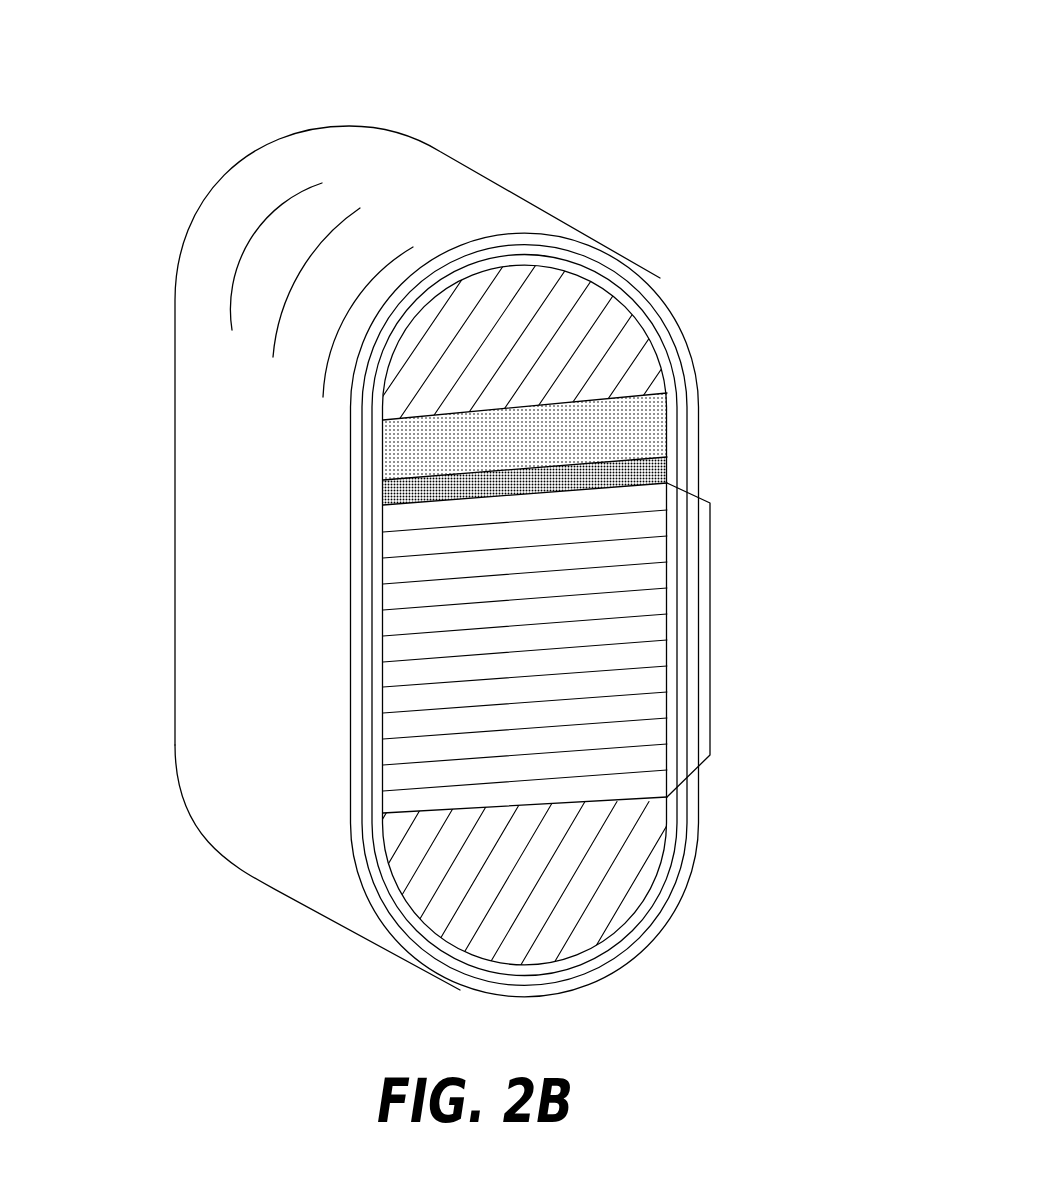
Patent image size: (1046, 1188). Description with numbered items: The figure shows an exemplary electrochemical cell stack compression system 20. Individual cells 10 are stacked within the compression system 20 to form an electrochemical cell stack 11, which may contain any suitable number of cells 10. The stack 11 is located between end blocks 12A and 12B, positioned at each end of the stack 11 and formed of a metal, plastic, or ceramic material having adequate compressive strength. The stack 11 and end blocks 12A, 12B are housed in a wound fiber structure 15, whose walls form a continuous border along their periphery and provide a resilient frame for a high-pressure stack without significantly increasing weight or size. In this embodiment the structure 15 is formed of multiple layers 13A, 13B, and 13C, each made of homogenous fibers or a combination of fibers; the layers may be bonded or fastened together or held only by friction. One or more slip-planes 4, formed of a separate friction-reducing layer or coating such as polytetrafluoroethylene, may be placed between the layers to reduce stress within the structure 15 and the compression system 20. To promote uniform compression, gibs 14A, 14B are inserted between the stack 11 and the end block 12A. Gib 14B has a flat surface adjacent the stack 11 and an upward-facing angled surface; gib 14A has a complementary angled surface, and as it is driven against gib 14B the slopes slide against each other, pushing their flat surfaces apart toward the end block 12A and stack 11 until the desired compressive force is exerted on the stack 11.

The electrochemical cell stack compression system 20 is at (461, 505).
The structure 15 is at (230, 658).
The layer 13A is at (670, 308).
The layer 13B is at (670, 336).
The layer 13C is at (687, 362).
The slip-plane 4 is at (556, 586).
The end block 12A is at (615, 323).
The end block 12B is at (588, 900).
The gib 14A is at (643, 431).
The gib 14B is at (677, 475).
The cell 10 is at (647, 560).
The electrochemical cell stack 11 is at (712, 627).